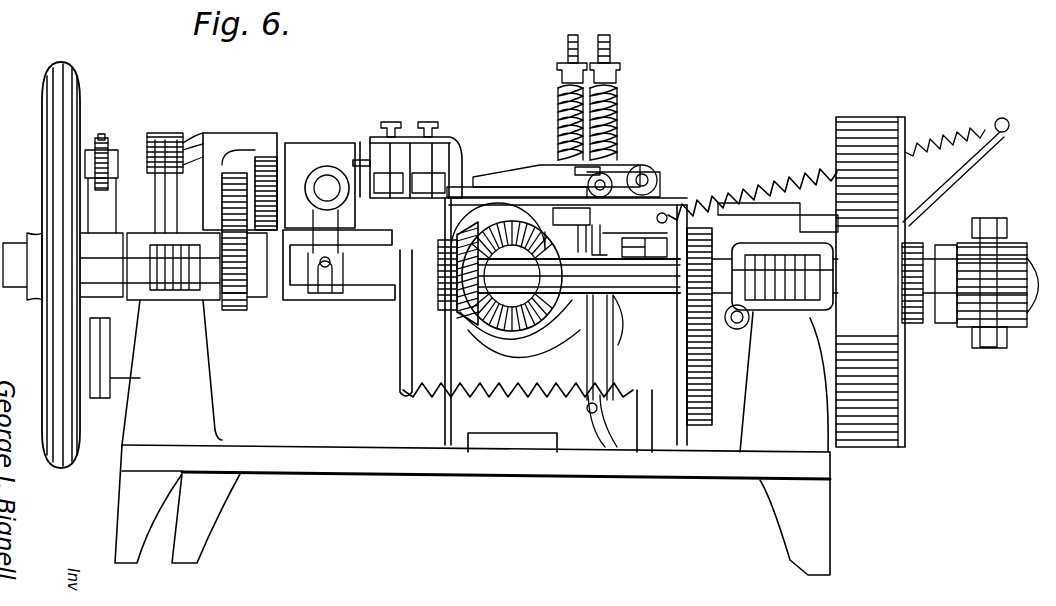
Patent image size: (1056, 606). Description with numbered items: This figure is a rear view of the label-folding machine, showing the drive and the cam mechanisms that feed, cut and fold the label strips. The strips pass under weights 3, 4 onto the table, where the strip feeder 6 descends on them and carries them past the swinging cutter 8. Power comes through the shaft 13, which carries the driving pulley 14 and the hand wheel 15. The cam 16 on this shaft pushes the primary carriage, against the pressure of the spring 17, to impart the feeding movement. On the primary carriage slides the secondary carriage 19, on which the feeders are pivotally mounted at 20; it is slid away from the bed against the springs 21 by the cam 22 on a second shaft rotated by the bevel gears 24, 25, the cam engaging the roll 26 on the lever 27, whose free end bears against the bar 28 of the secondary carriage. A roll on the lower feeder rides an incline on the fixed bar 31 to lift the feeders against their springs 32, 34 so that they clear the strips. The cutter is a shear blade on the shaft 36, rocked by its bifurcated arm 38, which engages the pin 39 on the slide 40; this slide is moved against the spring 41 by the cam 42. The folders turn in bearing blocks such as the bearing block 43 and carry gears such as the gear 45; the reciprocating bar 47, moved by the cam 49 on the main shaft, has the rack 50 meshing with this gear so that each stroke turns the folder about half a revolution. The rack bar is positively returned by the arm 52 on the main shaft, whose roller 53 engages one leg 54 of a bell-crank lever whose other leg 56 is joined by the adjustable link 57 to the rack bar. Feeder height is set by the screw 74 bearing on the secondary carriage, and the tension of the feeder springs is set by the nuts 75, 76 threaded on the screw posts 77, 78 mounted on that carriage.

The weight 3 is at (428, 183).
The weight 4 is at (388, 183).
The strip feeder 6 is at (520, 172).
The swinging cutter 8 is at (362, 180).
The shaft 13 is at (648, 300).
The driving pulley 14 is at (880, 290).
The hand wheel 15 is at (72, 466).
The cam 16 is at (708, 445).
The spring 17 is at (742, 328).
The secondary carriage 19 is at (580, 231).
The pivot 20 is at (648, 168).
The springs 21 is at (778, 178).
The cam 22 is at (545, 325).
The bevel gear 24 is at (475, 322).
The bevel gear 25 is at (592, 362).
The roll 26 is at (620, 330).
The lever 27 is at (606, 360).
The bar 28 is at (598, 242).
The fixed bar 31 is at (517, 195).
The spring 32 is at (558, 100).
The spring 34 is at (617, 110).
The shaft 36 is at (327, 180).
The arm 38 is at (325, 231).
The pin 39 is at (325, 292).
The slide 40 is at (339, 265).
The spring 41 is at (455, 388).
The cam 42 is at (506, 267).
The bearing block 43 is at (321, 179).
The gear 45 is at (232, 165).
The reciprocating bar 47 is at (230, 181).
The cam 49 is at (233, 312).
The rack 50 is at (265, 152).
The arm 52 is at (101, 191).
The roller 53 is at (103, 142).
The leg 54 is at (110, 350).
The leg 56 is at (178, 190).
The adjustable link 57 is at (180, 142).
The screw 74 is at (600, 172).
The nut 75 is at (620, 72).
The nut 76 is at (557, 70).
The screw post 77 is at (612, 48).
The screw post 78 is at (566, 45).